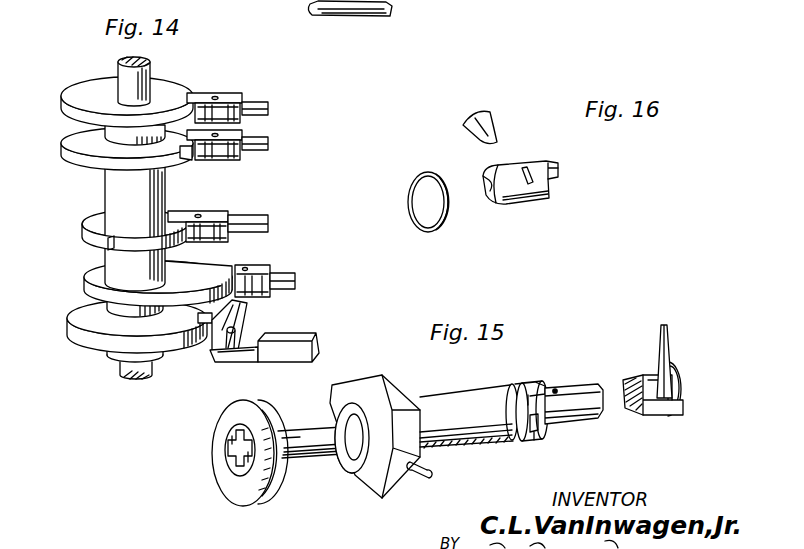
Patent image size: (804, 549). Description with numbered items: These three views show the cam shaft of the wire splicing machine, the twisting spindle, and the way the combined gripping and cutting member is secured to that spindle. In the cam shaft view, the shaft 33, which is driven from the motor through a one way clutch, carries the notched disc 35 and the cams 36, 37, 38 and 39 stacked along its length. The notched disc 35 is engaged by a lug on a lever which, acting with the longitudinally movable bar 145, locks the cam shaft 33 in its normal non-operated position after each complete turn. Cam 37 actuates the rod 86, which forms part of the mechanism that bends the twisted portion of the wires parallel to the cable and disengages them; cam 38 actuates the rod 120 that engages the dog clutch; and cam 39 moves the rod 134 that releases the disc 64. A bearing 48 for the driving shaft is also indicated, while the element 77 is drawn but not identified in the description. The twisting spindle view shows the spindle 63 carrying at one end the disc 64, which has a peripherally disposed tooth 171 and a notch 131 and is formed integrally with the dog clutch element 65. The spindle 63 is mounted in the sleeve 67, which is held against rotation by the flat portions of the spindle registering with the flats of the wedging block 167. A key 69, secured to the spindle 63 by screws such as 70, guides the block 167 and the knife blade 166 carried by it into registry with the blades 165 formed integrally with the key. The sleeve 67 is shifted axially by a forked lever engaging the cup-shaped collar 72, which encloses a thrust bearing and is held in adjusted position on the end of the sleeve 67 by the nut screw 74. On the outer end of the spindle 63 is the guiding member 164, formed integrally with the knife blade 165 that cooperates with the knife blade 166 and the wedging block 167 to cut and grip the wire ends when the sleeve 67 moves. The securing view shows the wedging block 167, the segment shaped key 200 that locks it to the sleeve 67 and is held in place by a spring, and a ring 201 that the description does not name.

In FIG. 14, the shaft 33 is at (151, 68).
In FIG. 14, the notched disc 35 is at (82, 340).
In FIG. 14, the cam 36 is at (90, 277).
In FIG. 14, the cam 37 is at (83, 227).
In FIG. 14, the cam 38 is at (62, 150).
In FIG. 14, the cam 39 is at (62, 108).
In FIG. 14, the bearing 48 is at (240, 318).
In FIG. 15, the spindle 63 is at (305, 462).
In FIG. 15, the disc 64 is at (259, 505).
In FIG. 15, the dog clutch element 65 is at (250, 480).
In FIG. 15, the sleeve 67 is at (446, 388).
In FIG. 15, the key 69 is at (573, 383).
In FIG. 15, the screw 70 is at (556, 388).
In FIG. 15, the cup-shaped collar 72 is at (368, 370).
In FIG. 15, the nut screw 74 is at (337, 415).
In FIG. 14, the bearing block 77 is at (301, 266).
In FIG. 14, the rod 86 is at (277, 209).
In FIG. 14, the rod 120 is at (258, 141).
In FIG. 15, the notch 131 is at (218, 441).
In FIG. 14, the rod 134 is at (258, 103).
In FIG. 14, the longitudinal movable bar 145 is at (314, 335).
In FIG. 15, the guiding member 164 is at (665, 335).
In FIG. 15, the knife blade 165 is at (634, 416).
In FIG. 15, the knife blade 166 is at (529, 433).
In FIG. 16, the wedging block 167 is at (527, 202).
In FIG. 15, the wedging block 167 is at (527, 383).
In FIG. 15, the peripherally disposed tooth 171 is at (226, 421).
In FIG. 16, the segment shaped key 200 is at (473, 132).
In FIG. 16, the ring 201 is at (408, 197).